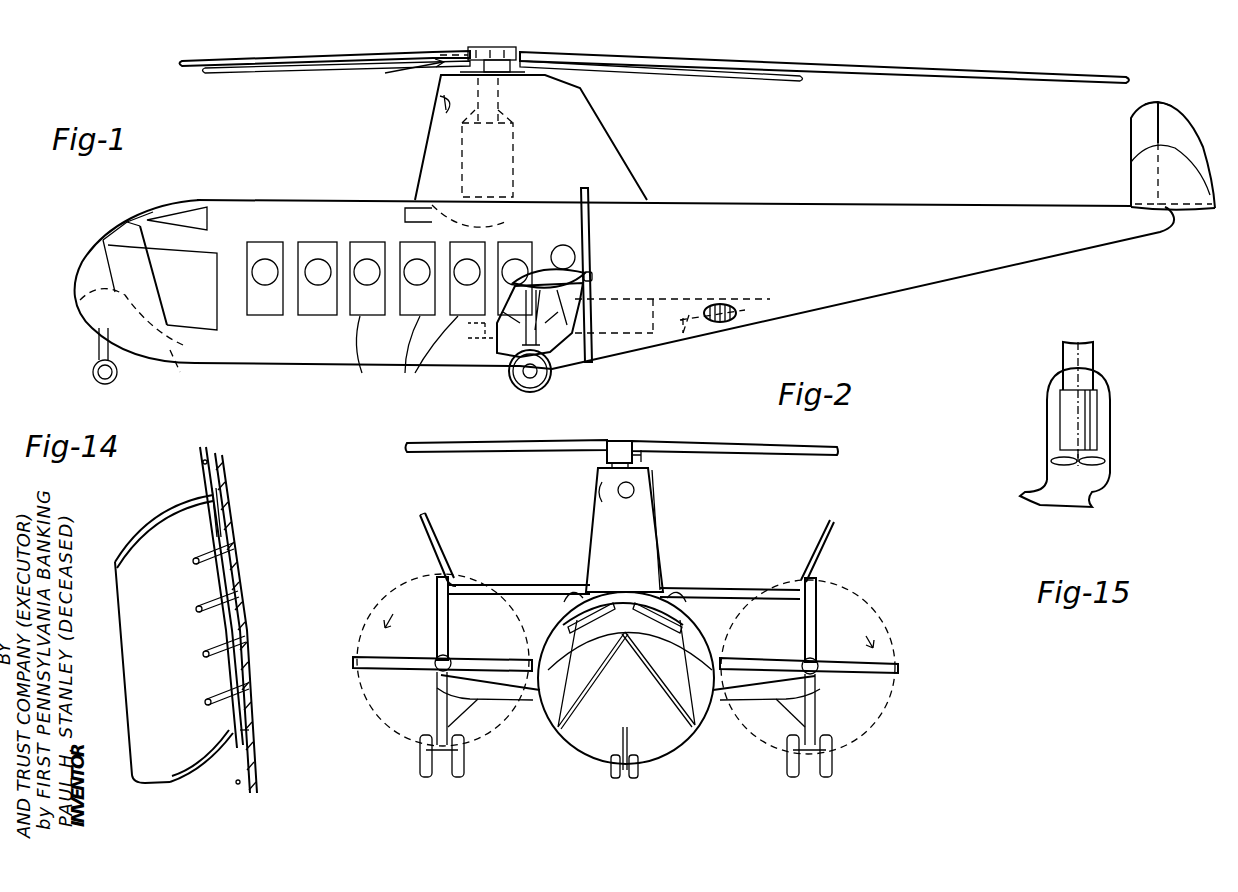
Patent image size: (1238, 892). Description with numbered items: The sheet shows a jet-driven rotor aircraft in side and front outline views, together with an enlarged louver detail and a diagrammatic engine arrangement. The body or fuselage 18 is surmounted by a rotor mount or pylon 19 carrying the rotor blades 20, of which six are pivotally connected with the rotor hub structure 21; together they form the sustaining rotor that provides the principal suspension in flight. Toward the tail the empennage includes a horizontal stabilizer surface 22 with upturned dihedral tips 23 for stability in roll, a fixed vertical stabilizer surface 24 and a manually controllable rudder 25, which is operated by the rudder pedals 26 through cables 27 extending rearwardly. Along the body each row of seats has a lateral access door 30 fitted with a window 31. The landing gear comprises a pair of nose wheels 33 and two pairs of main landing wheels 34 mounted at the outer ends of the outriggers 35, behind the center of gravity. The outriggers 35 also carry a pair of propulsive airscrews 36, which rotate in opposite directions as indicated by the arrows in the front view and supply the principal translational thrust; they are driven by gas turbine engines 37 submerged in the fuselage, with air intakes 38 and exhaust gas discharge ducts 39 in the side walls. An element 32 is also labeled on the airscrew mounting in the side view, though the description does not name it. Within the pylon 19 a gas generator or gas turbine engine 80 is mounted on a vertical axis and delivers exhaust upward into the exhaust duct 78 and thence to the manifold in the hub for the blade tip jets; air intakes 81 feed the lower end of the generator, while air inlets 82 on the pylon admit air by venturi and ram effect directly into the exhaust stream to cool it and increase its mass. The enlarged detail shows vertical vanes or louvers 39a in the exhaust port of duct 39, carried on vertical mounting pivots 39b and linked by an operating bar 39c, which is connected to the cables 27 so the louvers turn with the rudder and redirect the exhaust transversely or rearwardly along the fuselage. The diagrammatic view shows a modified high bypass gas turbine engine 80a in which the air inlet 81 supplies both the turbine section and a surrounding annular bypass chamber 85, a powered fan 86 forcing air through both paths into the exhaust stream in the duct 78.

In FIG. 1, the body or fuselage 18 is at (268, 358).
In FIG. 2, the body or fuselage 18 is at (592, 758).
In FIG. 14, the body or fuselage 18 is at (254, 749).
In FIG. 1, the rotor mount or pylon 19 is at (592, 118).
In FIG. 2, the rotor mount or pylon 19 is at (661, 530).
In FIG. 1, the rotor blades 20 is at (301, 48).
In FIG. 2, the rotor blades 20 is at (747, 445).
In FIG. 1, the rotor hub structure 21 is at (398, 71).
In FIG. 2, the horizontal stabilizer surface 22 is at (509, 586).
In FIG. 1, the upturned dihedral tips 23 is at (1137, 183).
In FIG. 2, the upturned dihedral tips 23 is at (440, 542).
In FIG. 1, the fixed vertical stabilizer surface 24 is at (1135, 130).
In FIG. 1, the rudder 25 is at (1170, 102).
In FIG. 1, the rudder pedals 26 is at (80, 300).
In FIG. 1, the cables 27 is at (182, 375).
In FIG. 14, the cables 27 is at (200, 450).
In FIG. 1, the lateral access door 30 is at (407, 353).
In FIG. 1, the window 31 is at (362, 238).
In FIG. 1, the propeller shaft 32 is at (593, 228).
In FIG. 1, the nose wheels 33 is at (93, 371).
In FIG. 2, the nose wheels 33 is at (642, 776).
In FIG. 1, the main landing wheels 34 is at (551, 381).
In FIG. 2, the main landing wheels 34 is at (418, 768).
In FIG. 1, the outriggers 35 is at (503, 348).
In FIG. 2, the outriggers 35 is at (515, 715).
In FIG. 1, the propulsive airscrews 36 is at (592, 195).
In FIG. 2, the propulsive airscrews 36 is at (372, 672).
In FIG. 1, the gas turbine engines 37 is at (632, 343).
In FIG. 1, the air intakes 38 is at (468, 338).
In FIG. 2, the air intakes 38 is at (548, 733).
In FIG. 1, the exhaust gas discharge ducts 39 is at (680, 344).
In FIG. 14, the exhaust gas discharge ducts 39 is at (135, 538).
In FIG. 1, the vanes or louvers 39a is at (732, 320).
In FIG. 14, the vanes or louvers 39a is at (240, 605).
In FIG. 14, the vertical mounting pivots 39b is at (207, 700).
In FIG. 14, the operating bar 39c is at (213, 530).
In FIG. 1, the exhaust duct 78 is at (462, 93).
In FIG. 15, the exhaust duct 78 is at (1096, 360).
In FIG. 1, the gas generator or gas turbine engine 80 is at (462, 150).
In FIG. 15, the high bypass gas turbine engine 80a is at (1093, 421).
In FIG. 1, the air intakes 81 is at (404, 205).
In FIG. 2, the air intakes 81 is at (566, 601).
In FIG. 15, the air intakes 81 is at (1057, 508).
In FIG. 1, the air inlets 82 is at (440, 99).
In FIG. 2, the air inlets 82 is at (598, 488).
In FIG. 15, the annular bypass chamber 85 is at (1047, 418).
In FIG. 15, the powered fan 86 is at (1091, 492).